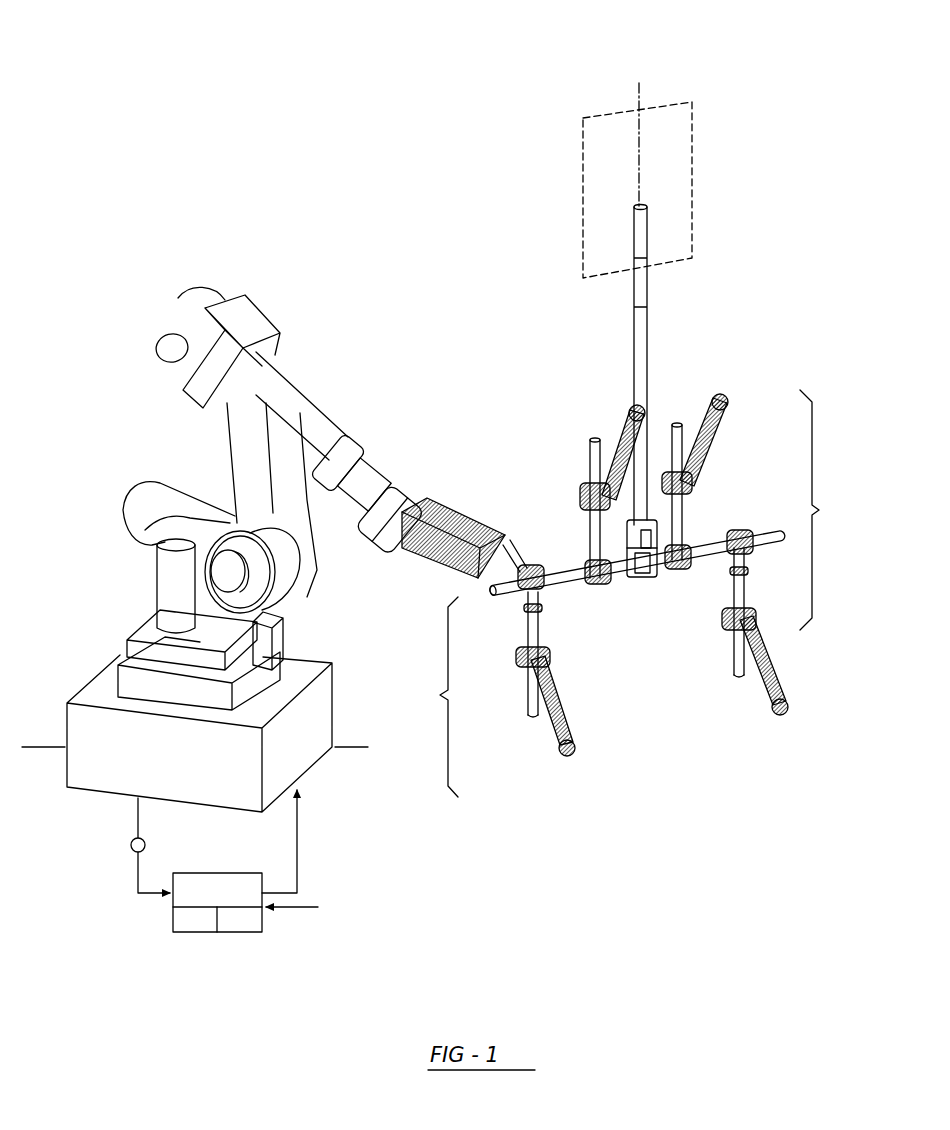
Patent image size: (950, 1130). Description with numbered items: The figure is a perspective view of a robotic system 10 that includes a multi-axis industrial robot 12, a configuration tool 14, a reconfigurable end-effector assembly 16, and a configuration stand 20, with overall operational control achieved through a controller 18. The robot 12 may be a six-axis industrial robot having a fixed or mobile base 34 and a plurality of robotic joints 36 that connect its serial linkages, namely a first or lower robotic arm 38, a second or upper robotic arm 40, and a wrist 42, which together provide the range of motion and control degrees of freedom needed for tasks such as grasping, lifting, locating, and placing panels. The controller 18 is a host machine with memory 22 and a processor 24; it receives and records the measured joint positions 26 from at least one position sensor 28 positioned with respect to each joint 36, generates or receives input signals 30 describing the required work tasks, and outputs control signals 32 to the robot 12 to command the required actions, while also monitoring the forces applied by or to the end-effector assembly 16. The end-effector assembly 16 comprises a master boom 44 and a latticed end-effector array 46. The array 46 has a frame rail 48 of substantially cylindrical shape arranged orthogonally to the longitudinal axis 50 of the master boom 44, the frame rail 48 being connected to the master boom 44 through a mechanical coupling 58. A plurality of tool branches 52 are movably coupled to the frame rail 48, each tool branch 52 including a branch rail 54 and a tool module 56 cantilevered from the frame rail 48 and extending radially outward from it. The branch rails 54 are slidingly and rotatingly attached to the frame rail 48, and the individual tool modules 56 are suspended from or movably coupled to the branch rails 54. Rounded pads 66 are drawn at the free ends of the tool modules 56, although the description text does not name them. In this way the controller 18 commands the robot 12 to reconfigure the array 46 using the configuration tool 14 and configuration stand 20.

The robotic system 10 is at (425, 198).
The multi-axis industrial robot 12 is at (195, 300).
The configuration tool 14 is at (444, 572).
The reconfigurable end-effector assembly 16 is at (548, 358).
The controller 18 is at (228, 873).
The configuration stand 20 is at (692, 213).
The memory 22 is at (196, 925).
The processor 24 is at (253, 925).
The measured joint positions 26 is at (138, 873).
The position sensor 28 is at (130, 845).
The input signals 30 is at (305, 908).
The control signals 32 is at (300, 858).
The base 34 is at (72, 765).
The robotic joints 36 is at (150, 345).
The lower robotic arm 38 is at (242, 452).
The upper robotic arm 40 is at (300, 405).
The wrist 42 is at (393, 547).
The master boom 44 is at (646, 297).
The latticed end-effector array 46 is at (827, 510).
The frame rail 48 is at (576, 568).
The longitudinal axis 50 is at (640, 100).
The tool branches 52 is at (432, 697).
The branch rail 54 is at (590, 520).
The tool module 56 is at (601, 405).
The mechanical coupling 58 is at (648, 580).
The clamp pads 66 is at (633, 405).